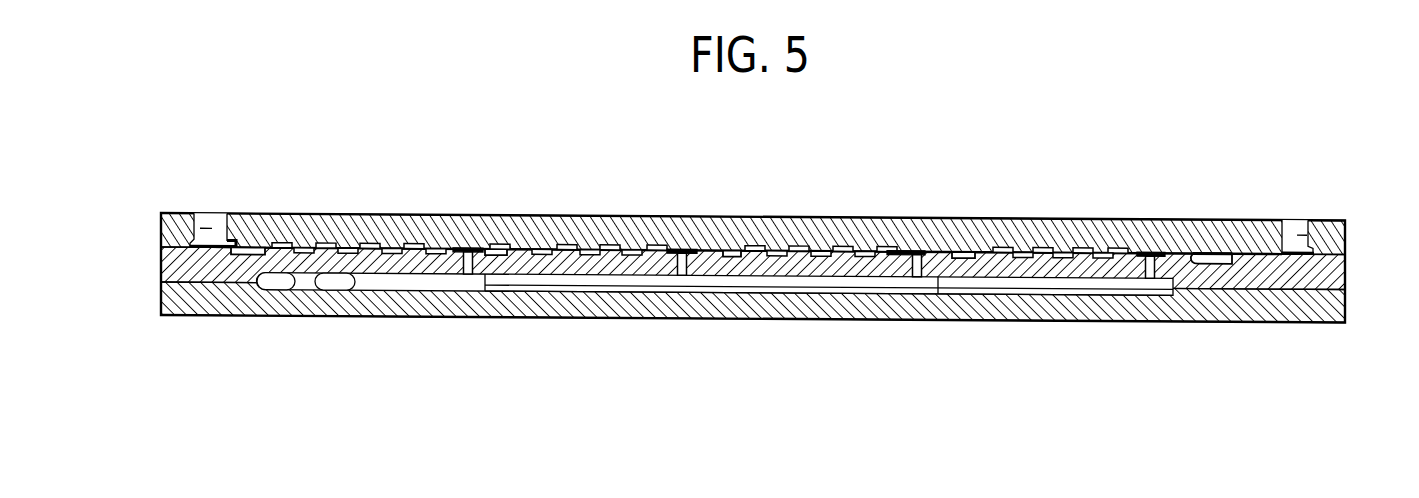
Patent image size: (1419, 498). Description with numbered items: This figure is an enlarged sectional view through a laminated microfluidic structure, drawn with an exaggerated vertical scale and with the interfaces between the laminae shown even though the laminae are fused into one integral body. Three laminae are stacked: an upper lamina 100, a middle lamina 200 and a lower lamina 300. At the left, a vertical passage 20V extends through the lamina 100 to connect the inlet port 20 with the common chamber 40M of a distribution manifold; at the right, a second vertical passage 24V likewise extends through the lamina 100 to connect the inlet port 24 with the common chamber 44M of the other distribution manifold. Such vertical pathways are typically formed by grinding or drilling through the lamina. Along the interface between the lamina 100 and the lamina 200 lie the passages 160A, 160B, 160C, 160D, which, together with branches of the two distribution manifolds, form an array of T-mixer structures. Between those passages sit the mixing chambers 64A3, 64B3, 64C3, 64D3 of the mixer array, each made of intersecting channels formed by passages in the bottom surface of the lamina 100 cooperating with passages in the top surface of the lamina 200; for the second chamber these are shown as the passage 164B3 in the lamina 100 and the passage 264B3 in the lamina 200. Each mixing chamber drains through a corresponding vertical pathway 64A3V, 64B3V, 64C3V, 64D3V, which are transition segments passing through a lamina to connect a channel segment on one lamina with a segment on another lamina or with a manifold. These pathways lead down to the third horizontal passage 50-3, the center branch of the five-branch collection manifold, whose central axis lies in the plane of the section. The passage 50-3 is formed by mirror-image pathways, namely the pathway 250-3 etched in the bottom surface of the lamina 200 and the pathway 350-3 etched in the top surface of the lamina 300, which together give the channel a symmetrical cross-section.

The lamina 100 is at (1347, 239).
The lamina 200 is at (1347, 276).
The lamina 300 is at (1347, 311).
The inlet port 20 is at (210, 195).
The vertical passage 20V is at (180, 213).
The common chamber 40M is at (244, 246).
The inlet port 24 is at (1298, 196).
The vertical passage 24V is at (1313, 238).
The common chamber 44M is at (1204, 249).
The passage 160A is at (282, 251).
The passage 160B is at (490, 248).
The passage 160C is at (725, 247).
The passage 160D is at (958, 250).
The mixing chamber 64A3 is at (473, 210).
The mixing chamber 64B3 is at (690, 210).
The mixing chamber 64C3 is at (925, 212).
The mixing chamber 64D3 is at (1155, 215).
The vertical pathway 64A3V is at (444, 250).
The vertical pathway 64B3V is at (652, 251).
The vertical pathway 64C3V is at (886, 250).
The vertical pathway 64D3V is at (1128, 253).
The passage 164B3 is at (543, 316).
The passage 264B3 is at (542, 252).
The third horizontal passage 50-3 is at (603, 362).
The pathway 250-3 is at (653, 278).
The pathway 350-3 is at (708, 280).